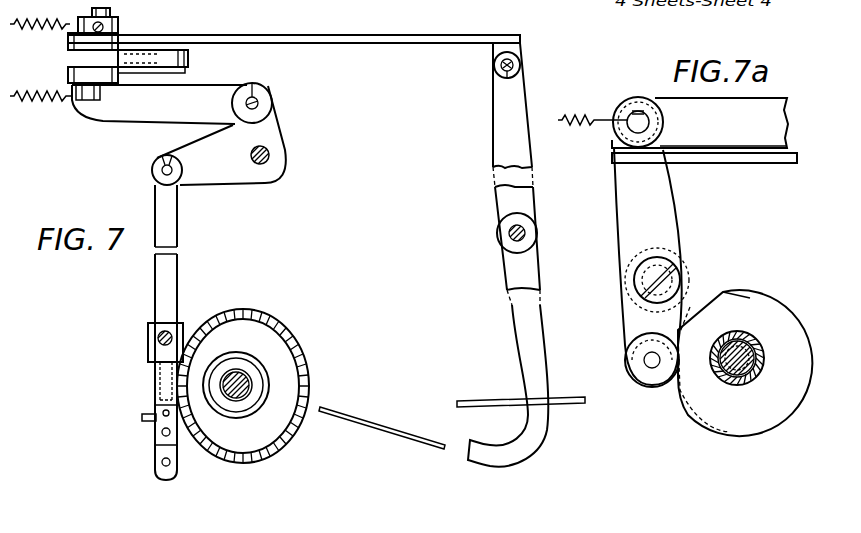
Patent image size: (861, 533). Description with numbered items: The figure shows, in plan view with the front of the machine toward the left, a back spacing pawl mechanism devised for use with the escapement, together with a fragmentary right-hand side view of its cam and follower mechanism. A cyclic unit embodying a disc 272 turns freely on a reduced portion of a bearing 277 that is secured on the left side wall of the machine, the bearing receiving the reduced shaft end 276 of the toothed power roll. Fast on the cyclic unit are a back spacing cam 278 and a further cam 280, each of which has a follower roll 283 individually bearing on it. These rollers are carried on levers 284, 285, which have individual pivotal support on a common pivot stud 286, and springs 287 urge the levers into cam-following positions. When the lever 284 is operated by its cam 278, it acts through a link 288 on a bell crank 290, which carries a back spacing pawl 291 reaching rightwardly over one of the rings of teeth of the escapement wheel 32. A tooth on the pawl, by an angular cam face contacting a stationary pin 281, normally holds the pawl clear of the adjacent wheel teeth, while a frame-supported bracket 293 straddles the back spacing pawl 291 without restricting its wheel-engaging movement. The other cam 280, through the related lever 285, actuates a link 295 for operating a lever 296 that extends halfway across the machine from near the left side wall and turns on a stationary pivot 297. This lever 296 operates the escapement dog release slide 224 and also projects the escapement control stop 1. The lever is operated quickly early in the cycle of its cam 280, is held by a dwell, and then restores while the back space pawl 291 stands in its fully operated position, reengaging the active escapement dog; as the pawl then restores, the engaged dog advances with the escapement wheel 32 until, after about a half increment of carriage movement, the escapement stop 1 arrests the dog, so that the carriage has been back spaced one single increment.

In FIG. 7, the escapement control stop 1 is at (386, 420).
In FIG. 7, the escapement wheel 32 is at (272, 338).
In FIG. 7, the escapement dog release slide 224 is at (487, 400).
In FIG. 7A, the disc 272 is at (752, 380).
In FIG. 7A, the reduced shaft end 276 is at (762, 372).
In FIG. 7A, the bearing 277 is at (733, 388).
In FIG. 7, the back spacing cam 278 is at (166, 73).
In FIG. 7A, the back spacing cam 278 is at (751, 297).
In FIG. 7, the cam 280 is at (190, 57).
In FIG. 7A, the cam 280 is at (780, 305).
In FIG. 7, the stationary pin 281 is at (150, 421).
In FIG. 7, the follower roll 283 is at (146, 37).
In FIG. 7A, the follower roll 283 is at (659, 387).
In FIG. 7, the lever 284 is at (68, 75).
In FIG. 7A, the lever 284 is at (668, 207).
In FIG. 7, the lever 285 is at (68, 47).
In FIG. 7, the common pivot stud 286 is at (112, 12).
In FIG. 7A, the common pivot stud 286 is at (676, 275).
In FIG. 7, the spring 287 is at (68, 28).
In FIG. 7A, the spring 287 is at (593, 103).
In FIG. 7, the link 288 is at (155, 122).
In FIG. 7A, the link 288 is at (762, 163).
In FIG. 7, the bell crank 290 is at (220, 184).
In FIG. 7, the back spacing pawl 291 is at (178, 273).
In FIG. 7, the frame-supported bracket 293 is at (148, 340).
In FIG. 7, the link 295 is at (408, 43).
In FIG. 7A, the link 295 is at (659, 100).
In FIG. 7, the lever 296 is at (495, 108).
In FIG. 7, the stationary pivot 297 is at (509, 233).